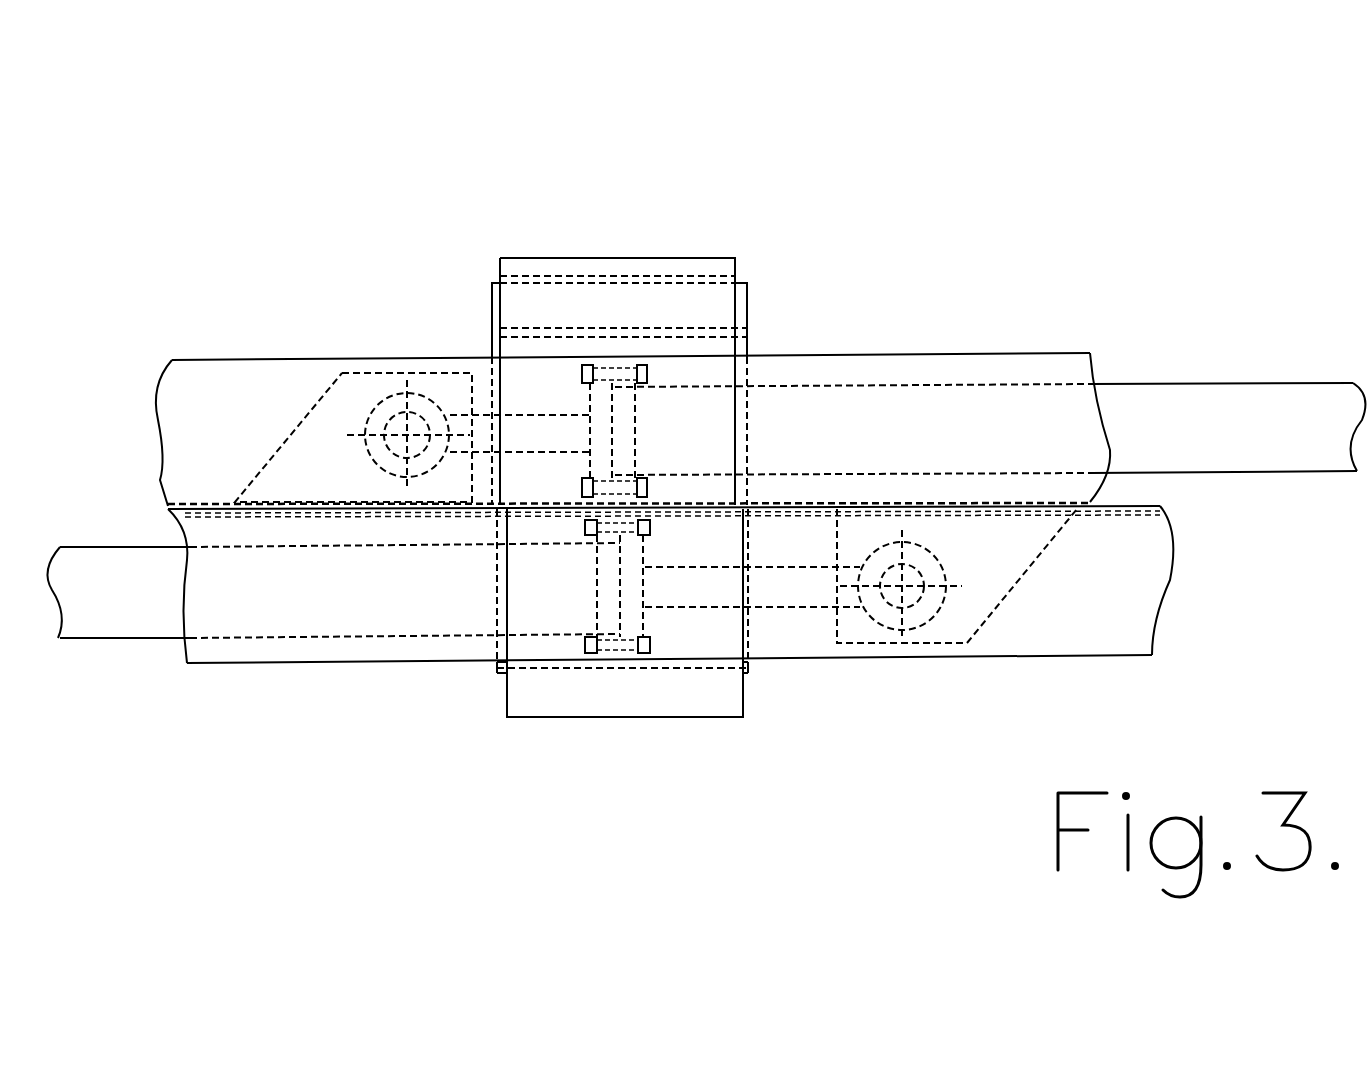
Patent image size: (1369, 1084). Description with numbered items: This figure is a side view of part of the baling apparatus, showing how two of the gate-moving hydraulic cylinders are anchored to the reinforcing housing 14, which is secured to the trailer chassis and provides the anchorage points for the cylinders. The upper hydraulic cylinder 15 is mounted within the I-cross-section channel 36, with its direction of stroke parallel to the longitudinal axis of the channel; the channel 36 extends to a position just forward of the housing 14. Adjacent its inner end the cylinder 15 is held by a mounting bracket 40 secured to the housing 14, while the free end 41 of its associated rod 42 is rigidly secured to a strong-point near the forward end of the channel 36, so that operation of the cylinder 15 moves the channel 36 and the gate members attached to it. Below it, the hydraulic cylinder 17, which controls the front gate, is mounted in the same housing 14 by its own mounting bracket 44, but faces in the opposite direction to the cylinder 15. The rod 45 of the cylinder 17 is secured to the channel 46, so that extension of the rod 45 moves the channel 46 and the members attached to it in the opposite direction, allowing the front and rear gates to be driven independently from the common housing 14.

The housing 14 is at (658, 263).
The hydraulic cylinder 15 is at (1245, 424).
The hydraulic cylinder 17 is at (142, 622).
The channel 36 is at (248, 507).
The mounting bracket 40 is at (623, 403).
The free end 41 is at (397, 432).
The rod 42 is at (520, 417).
The mounting bracket 44 is at (600, 653).
The rod 45 is at (789, 590).
The channel 46 is at (957, 632).